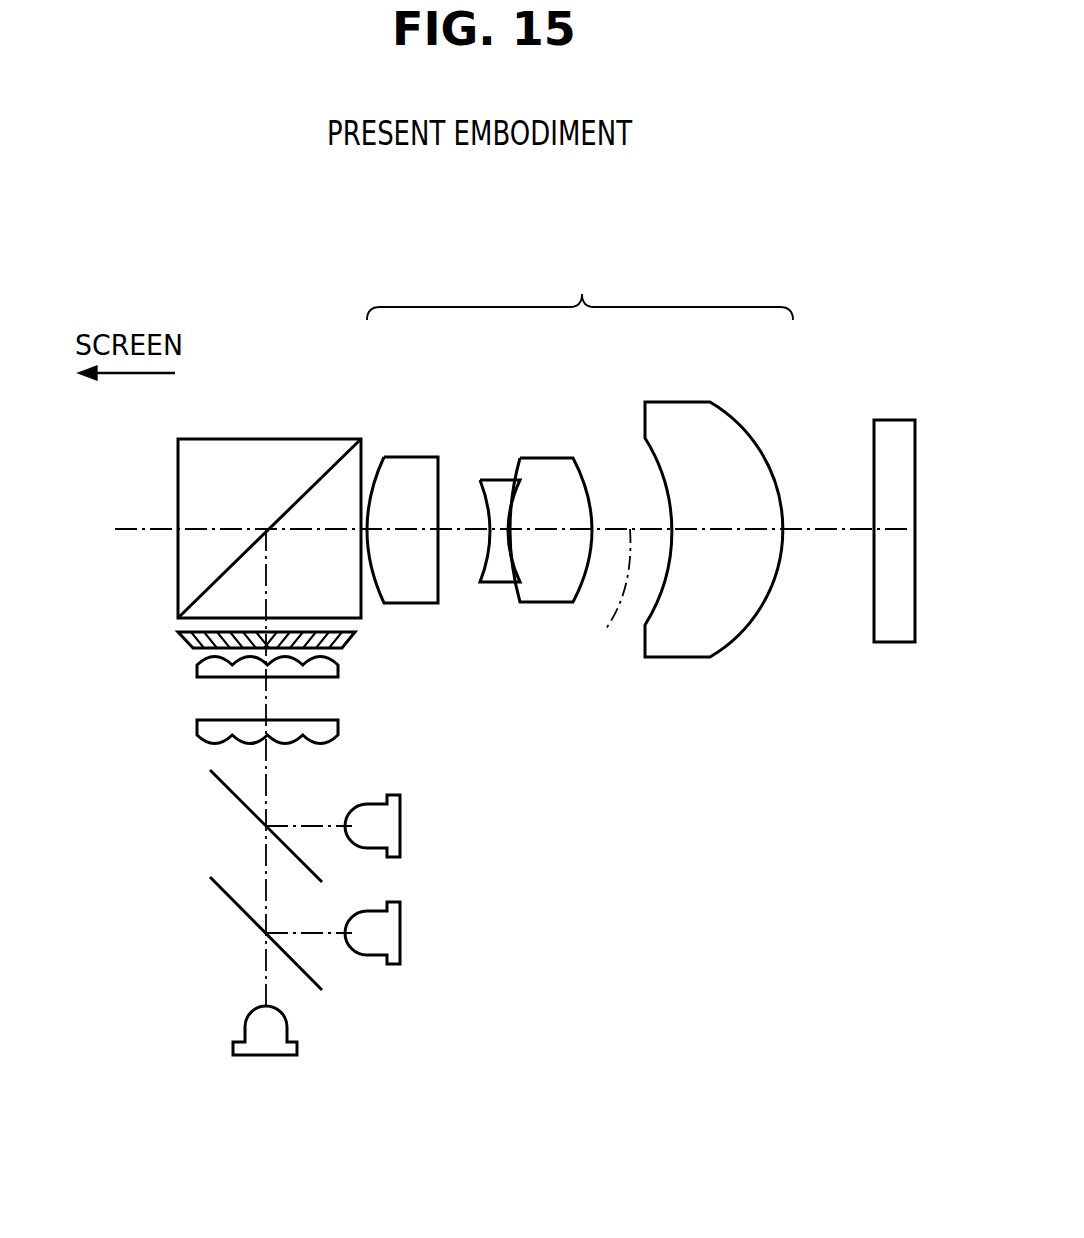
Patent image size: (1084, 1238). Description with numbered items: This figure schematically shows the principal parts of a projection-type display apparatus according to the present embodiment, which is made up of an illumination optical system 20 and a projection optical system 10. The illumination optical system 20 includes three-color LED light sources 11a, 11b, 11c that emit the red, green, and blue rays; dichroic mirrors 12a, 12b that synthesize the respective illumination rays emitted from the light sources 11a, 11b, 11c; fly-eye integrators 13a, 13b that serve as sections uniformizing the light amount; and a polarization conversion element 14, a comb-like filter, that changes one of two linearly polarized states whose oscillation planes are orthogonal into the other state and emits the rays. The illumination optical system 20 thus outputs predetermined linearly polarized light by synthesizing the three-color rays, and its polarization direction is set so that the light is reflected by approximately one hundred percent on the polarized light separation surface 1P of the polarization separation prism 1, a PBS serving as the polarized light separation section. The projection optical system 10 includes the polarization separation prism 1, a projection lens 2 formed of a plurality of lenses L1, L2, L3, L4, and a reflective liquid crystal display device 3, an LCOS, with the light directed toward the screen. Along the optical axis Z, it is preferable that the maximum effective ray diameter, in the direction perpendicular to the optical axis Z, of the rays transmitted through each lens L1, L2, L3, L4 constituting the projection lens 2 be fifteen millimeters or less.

The projection optical system 10 is at (266, 270).
The projection lens 2 is at (580, 284).
The polarization separation prism 1 is at (241, 437).
The polarized light separation surface 1P is at (303, 486).
The lens L1 is at (407, 462).
The lens L2 is at (490, 482).
The lens L3 is at (558, 462).
The lens L4 is at (683, 412).
The reflective liquid crystal display device 3 is at (893, 428).
The optical axis Z is at (612, 597).
The polarization conversion element 14 is at (350, 638).
The fly-eye integrator 13b is at (338, 678).
The fly-eye integrator 13a is at (338, 737).
The dichroic mirror 12b is at (228, 793).
The dichroic mirror 12a is at (228, 898).
The LED light source 11c is at (400, 822).
The LED light source 11b is at (400, 930).
The LED light source 11a is at (297, 1052).
The illumination optical system 20 is at (585, 866).